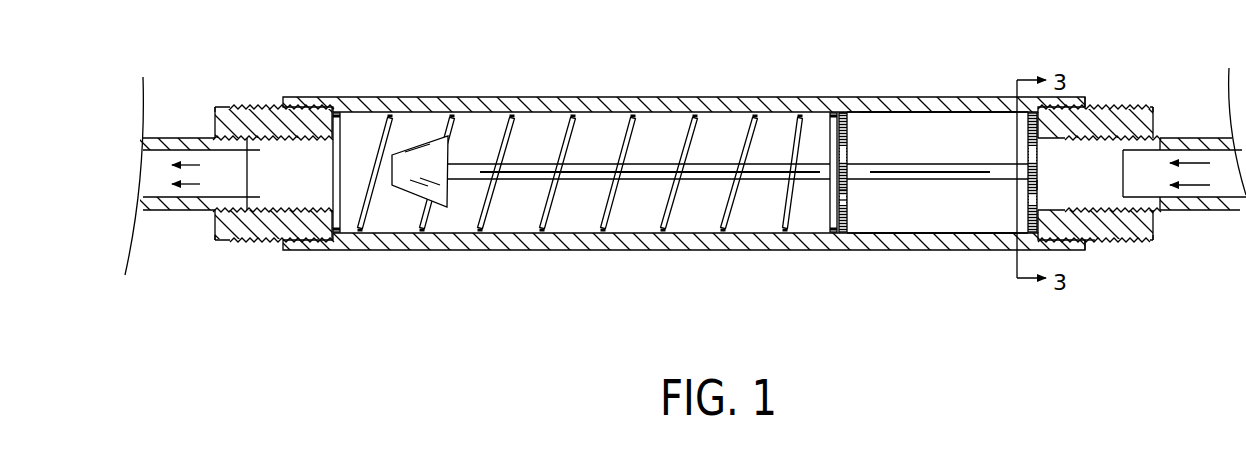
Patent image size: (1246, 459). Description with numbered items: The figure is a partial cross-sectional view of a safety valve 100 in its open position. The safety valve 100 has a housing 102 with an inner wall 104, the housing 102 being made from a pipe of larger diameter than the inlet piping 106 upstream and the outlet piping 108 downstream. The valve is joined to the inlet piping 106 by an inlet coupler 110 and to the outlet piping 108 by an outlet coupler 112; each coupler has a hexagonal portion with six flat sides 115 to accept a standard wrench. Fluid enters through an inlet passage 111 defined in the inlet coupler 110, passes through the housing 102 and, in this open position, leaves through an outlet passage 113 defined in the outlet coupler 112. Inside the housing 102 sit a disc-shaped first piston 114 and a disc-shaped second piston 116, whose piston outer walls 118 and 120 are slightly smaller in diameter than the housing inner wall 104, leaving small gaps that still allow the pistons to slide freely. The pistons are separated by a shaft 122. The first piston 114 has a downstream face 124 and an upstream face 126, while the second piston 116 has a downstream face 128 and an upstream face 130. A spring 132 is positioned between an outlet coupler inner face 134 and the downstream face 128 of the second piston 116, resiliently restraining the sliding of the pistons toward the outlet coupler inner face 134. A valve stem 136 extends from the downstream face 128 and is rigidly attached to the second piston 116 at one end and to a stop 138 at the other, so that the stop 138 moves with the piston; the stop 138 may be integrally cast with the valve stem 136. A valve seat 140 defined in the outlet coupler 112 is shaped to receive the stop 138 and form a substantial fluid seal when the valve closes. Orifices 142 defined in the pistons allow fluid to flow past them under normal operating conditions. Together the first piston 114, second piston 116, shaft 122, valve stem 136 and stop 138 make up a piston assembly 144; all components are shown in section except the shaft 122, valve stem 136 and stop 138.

The safety valve 100 is at (753, 70).
The housing 102 is at (828, 103).
The inner wall 104 is at (893, 117).
The inlet piping 106 is at (1205, 143).
The outlet piping 108 is at (164, 140).
The inlet coupler 110 is at (1112, 127).
The inlet passage 111 is at (1092, 190).
The outlet coupler 112 is at (275, 118).
The outlet passage 113 is at (255, 193).
The first piston 114 is at (1038, 183).
The flat sides 115 is at (222, 242).
The second piston 116 is at (845, 200).
The piston outer wall 118 is at (1018, 95).
The piston outer wall 120 is at (862, 104).
The shaft 122 is at (883, 167).
The downstream face 124 is at (1028, 185).
The upstream face 126 is at (1053, 183).
The downstream face 128 is at (833, 212).
The upstream face 130 is at (840, 232).
The spring 132 is at (683, 142).
The outlet coupler inner face 134 is at (303, 130).
The valve stem 136 is at (550, 167).
The stop 138 is at (441, 153).
The valve seat 140 is at (331, 140).
The orifices 142 is at (846, 197).
The piston assembly 144 is at (960, 133).